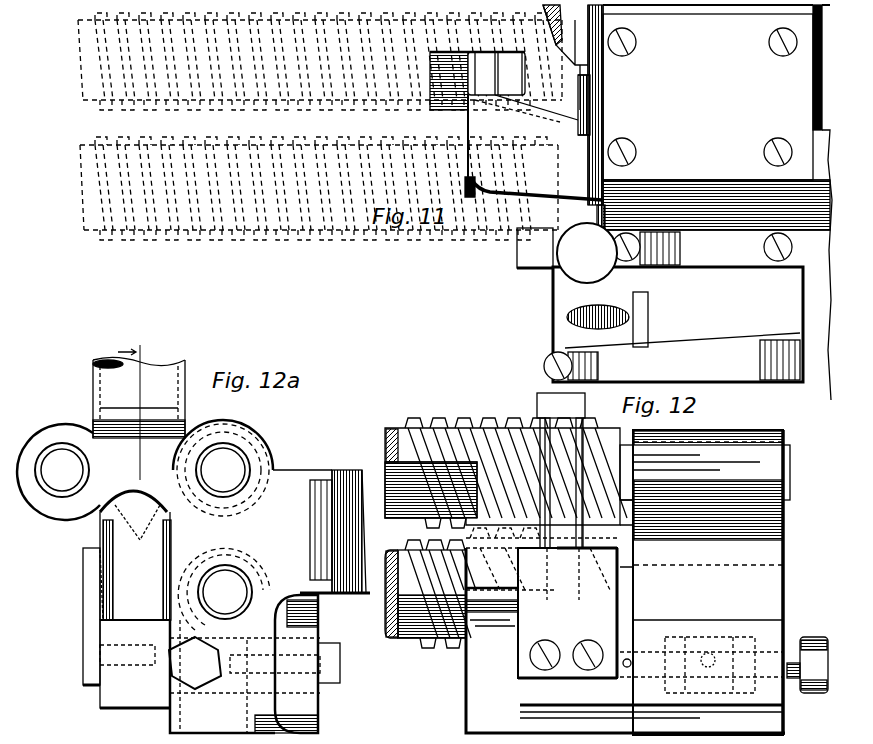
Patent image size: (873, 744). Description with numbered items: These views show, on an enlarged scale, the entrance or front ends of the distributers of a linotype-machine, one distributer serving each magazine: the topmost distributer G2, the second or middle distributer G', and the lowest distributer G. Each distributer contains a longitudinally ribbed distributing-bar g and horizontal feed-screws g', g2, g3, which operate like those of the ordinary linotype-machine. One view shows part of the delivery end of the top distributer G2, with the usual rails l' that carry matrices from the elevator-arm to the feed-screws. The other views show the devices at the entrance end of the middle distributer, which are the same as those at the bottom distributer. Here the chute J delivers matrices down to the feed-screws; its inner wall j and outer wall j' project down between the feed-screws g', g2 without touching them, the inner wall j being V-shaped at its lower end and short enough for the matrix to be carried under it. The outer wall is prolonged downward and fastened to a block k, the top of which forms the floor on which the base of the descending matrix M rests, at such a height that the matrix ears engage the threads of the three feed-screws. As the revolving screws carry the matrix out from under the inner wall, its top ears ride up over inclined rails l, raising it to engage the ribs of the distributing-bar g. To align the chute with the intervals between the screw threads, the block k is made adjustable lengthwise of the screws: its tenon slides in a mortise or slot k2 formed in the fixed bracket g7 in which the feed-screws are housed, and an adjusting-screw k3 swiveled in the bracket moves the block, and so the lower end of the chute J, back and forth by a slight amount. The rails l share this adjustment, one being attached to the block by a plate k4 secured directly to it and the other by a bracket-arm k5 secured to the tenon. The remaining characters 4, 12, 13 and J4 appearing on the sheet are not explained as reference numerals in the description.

In FIG. 11, the distributing-bar g is at (459, 78).
In FIG. 12, the distributing-bar g is at (506, 484).
In FIG. 12, the feed-screw g' is at (492, 401).
In FIG. 12A, the feed-screw g' is at (247, 462).
In FIG. 12A, the feed-screw g2 is at (63, 420).
In FIG. 12, the feed-screw g3 is at (440, 588).
In FIG. 12A, the feed-screw g3 is at (330, 525).
In FIG. 12, the fixed bracket g7 is at (783, 540).
In FIG. 12A, the fixed bracket g7 is at (340, 470).
In FIG. 12A, the lowest distributer G is at (135, 378).
In FIG. 12, the second distributer G' is at (723, 570).
In FIG. 12, the topmost distributer G2 is at (647, 202).
In FIG. 12, the chute J is at (583, 410).
In FIG. 12A, the chute J is at (188, 365).
In FIG. 12, the inner wall of chute j is at (518, 409).
In FIG. 12A, the inner wall of chute j is at (62, 548).
In FIG. 12, the outer wall of chute j' is at (603, 411).
In FIG. 12A, the outer wall of chute j' is at (217, 401).
In FIG. 12, the block k is at (528, 688).
In FIG. 12A, the block k is at (115, 680).
In FIG. 12, the mortise or slot k2 is at (750, 688).
In FIG. 12, the adjusting-screw k3 is at (797, 647).
In FIG. 12A, the adjusting-screw k3 is at (255, 600).
In FIG. 12, the plate k4 is at (472, 663).
In FIG. 12A, the plate k4 is at (83, 625).
In FIG. 12, the bracket-arm k5 is at (475, 712).
In FIG. 12A, the bracket-arm k5 is at (320, 628).
In FIG. 12A, the inclined rails l is at (80, 585).
In FIG. 11, the rails l' is at (517, 122).
In FIG. 12A, the matrix M is at (100, 603).
In FIG. 12A, the axis line 4 is at (132, 400).
In FIG. 11, the wedge 12 is at (565, 120).
In FIG. 12, the spring 13 is at (553, 297).
In FIG. 12A, the bracket J4 is at (120, 733).